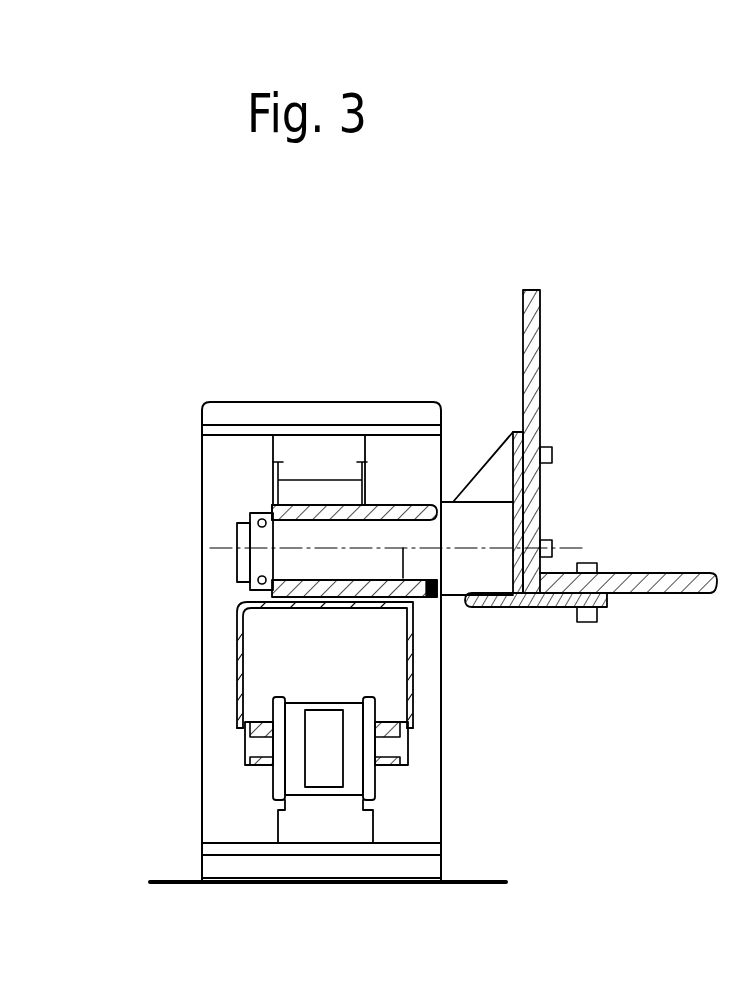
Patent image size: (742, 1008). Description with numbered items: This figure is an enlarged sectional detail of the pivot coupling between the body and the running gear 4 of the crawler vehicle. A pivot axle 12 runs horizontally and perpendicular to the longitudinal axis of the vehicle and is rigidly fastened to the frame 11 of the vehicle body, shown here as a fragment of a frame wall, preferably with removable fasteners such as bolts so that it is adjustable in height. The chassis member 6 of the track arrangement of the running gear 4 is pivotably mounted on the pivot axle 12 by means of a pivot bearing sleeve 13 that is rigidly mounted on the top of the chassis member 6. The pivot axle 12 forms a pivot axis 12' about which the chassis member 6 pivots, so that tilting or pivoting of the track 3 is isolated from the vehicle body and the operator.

The track 3 is at (250, 402).
The running gear 4 is at (218, 697).
The chassis member 6 is at (235, 655).
The frame 11 is at (542, 355).
The pivot axle 12 is at (411, 665).
The pivot axis 12' is at (161, 497).
The pivot bearing sleeve 13 is at (387, 505).